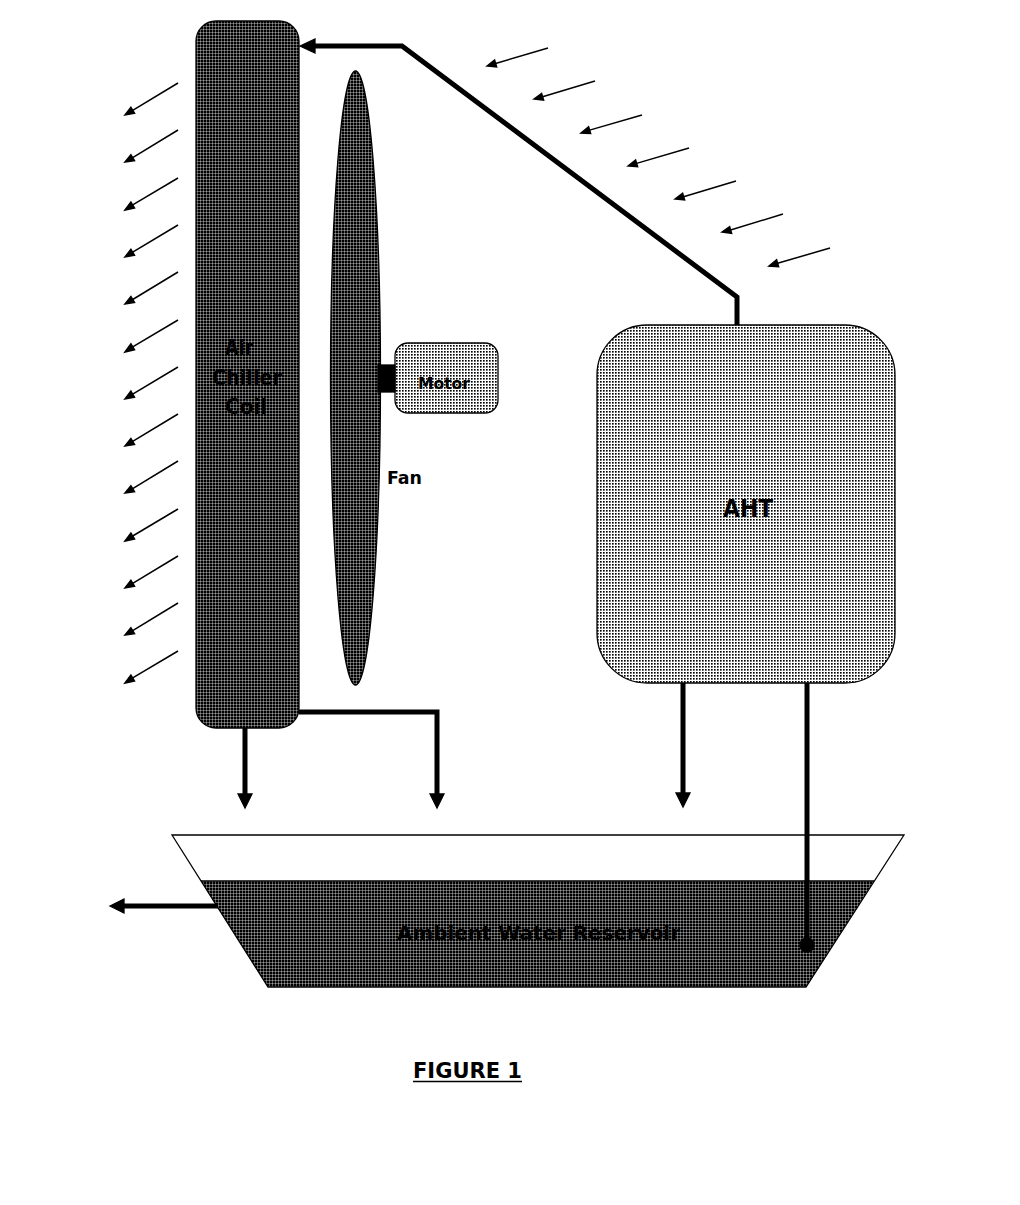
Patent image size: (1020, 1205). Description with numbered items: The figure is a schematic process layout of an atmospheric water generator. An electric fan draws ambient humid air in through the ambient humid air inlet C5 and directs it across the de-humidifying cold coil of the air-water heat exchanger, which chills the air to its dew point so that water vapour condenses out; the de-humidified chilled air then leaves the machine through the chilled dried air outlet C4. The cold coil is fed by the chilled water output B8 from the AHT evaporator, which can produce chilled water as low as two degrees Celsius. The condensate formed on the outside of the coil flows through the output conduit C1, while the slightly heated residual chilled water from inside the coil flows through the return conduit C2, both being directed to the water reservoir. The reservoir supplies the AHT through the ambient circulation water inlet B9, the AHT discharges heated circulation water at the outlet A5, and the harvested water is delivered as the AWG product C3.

The output conduit C1 is at (243, 770).
The return conduit C2 is at (439, 726).
The AWG product C3 is at (152, 906).
The chilled dried air outlet C4 is at (130, 513).
The ambient humid air inlet C5 is at (608, 96).
The heated circulation water outlet A5 is at (680, 725).
The chilled water output B8 is at (568, 168).
The ambient circulation water inlet B9 is at (806, 738).